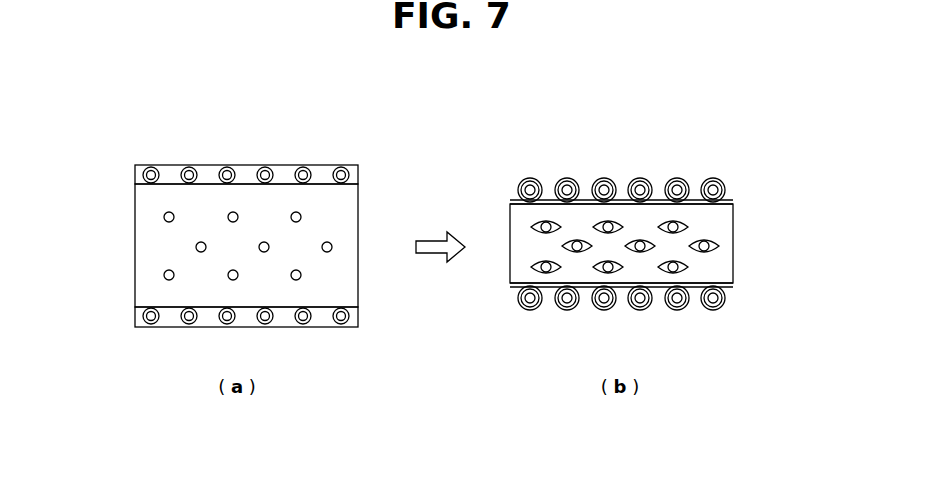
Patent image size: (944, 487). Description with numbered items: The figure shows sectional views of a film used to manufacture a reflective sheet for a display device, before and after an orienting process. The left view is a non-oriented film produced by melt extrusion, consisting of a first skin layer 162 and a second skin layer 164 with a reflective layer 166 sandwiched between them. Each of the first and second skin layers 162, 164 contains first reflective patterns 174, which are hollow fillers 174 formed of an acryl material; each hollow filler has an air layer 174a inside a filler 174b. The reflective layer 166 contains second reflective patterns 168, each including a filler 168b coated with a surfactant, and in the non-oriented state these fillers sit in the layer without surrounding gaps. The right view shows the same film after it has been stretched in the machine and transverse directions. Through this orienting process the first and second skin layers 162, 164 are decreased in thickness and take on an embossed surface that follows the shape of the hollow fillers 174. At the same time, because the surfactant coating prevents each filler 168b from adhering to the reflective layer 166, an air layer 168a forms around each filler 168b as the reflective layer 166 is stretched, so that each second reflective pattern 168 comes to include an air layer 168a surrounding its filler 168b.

The first skin layer 162 is at (137, 178).
The second skin layer 164 is at (137, 316).
The reflective layer 166 is at (137, 270).
The second reflective patterns 168 is at (817, 233).
The air layer 168a is at (166, 216).
The filler 168b is at (714, 249).
The first reflective patterns 174 is at (222, 94).
The air layer 174a is at (190, 170).
The filler 174b is at (188, 170).